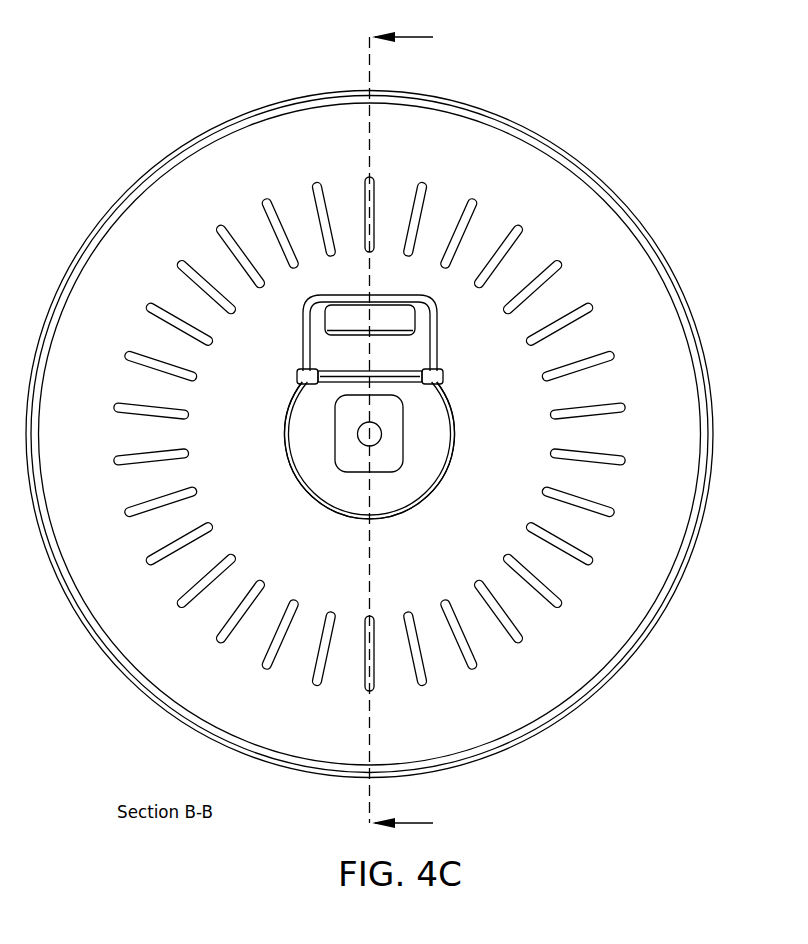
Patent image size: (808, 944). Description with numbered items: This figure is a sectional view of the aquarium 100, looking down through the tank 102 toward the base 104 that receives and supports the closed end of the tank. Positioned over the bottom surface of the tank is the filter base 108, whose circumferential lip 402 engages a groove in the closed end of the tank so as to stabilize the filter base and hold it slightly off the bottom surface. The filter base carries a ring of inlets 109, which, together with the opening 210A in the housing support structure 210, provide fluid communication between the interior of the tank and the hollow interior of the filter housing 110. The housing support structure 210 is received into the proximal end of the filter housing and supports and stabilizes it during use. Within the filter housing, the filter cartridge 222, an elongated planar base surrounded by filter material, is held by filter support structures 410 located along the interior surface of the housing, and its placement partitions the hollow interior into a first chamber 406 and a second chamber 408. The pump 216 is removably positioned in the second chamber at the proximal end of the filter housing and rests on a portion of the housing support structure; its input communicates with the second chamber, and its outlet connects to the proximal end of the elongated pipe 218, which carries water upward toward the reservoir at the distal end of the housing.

The aquarium 100 is at (650, 80).
The tank 102 is at (172, 167).
The base 104 is at (652, 238).
The filter base 108 is at (571, 243).
The inlets 109 is at (473, 656).
The filter housing 110 is at (455, 446).
The housing support structure 210 is at (329, 432).
The opening 210A is at (397, 323).
The pump 216 is at (402, 452).
The elongated pipe 218 is at (358, 440).
The filter cartridge 222 is at (342, 374).
The circumferential lip 402 is at (672, 352).
The first chamber 406 is at (400, 353).
The second chamber 408 is at (430, 413).
The filter support structures 410 is at (298, 377).